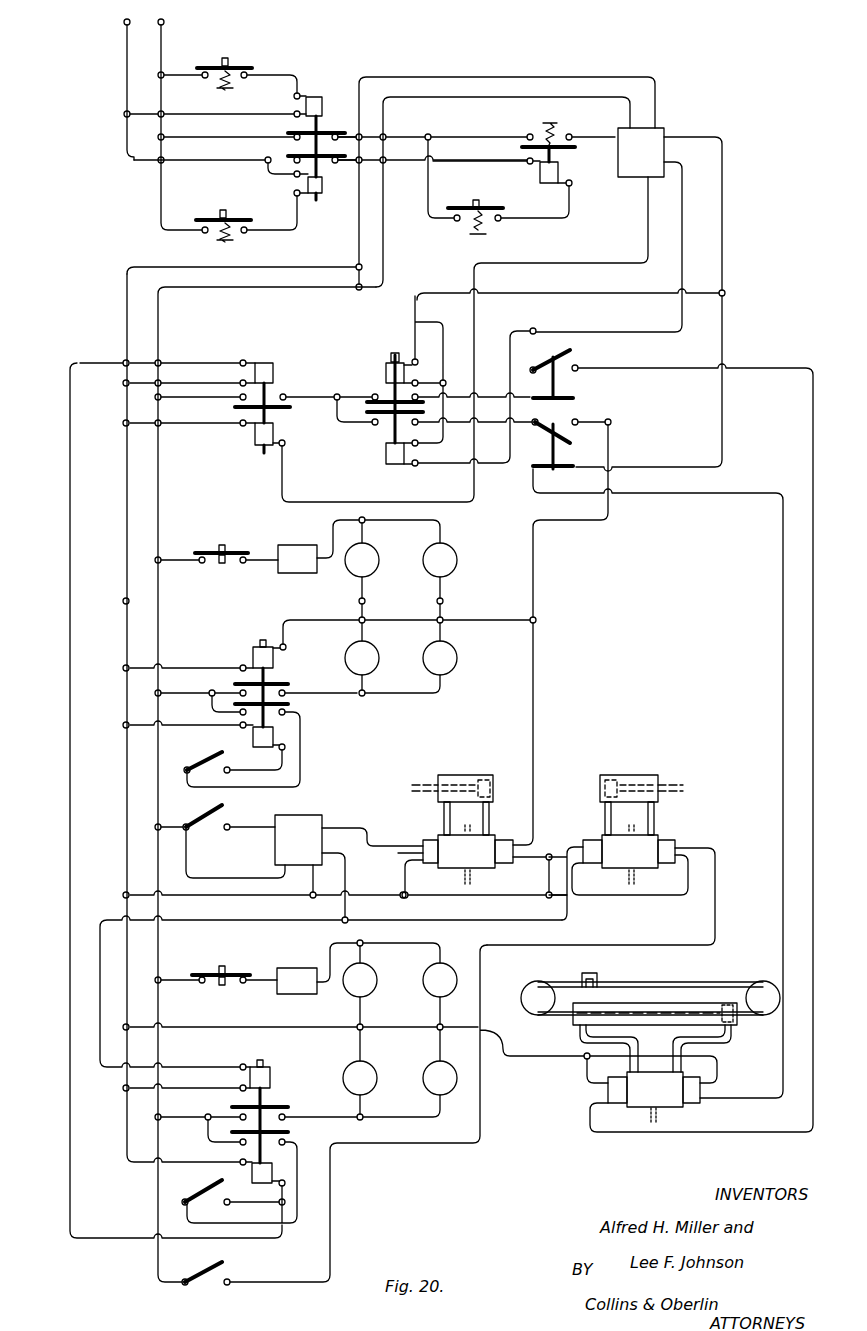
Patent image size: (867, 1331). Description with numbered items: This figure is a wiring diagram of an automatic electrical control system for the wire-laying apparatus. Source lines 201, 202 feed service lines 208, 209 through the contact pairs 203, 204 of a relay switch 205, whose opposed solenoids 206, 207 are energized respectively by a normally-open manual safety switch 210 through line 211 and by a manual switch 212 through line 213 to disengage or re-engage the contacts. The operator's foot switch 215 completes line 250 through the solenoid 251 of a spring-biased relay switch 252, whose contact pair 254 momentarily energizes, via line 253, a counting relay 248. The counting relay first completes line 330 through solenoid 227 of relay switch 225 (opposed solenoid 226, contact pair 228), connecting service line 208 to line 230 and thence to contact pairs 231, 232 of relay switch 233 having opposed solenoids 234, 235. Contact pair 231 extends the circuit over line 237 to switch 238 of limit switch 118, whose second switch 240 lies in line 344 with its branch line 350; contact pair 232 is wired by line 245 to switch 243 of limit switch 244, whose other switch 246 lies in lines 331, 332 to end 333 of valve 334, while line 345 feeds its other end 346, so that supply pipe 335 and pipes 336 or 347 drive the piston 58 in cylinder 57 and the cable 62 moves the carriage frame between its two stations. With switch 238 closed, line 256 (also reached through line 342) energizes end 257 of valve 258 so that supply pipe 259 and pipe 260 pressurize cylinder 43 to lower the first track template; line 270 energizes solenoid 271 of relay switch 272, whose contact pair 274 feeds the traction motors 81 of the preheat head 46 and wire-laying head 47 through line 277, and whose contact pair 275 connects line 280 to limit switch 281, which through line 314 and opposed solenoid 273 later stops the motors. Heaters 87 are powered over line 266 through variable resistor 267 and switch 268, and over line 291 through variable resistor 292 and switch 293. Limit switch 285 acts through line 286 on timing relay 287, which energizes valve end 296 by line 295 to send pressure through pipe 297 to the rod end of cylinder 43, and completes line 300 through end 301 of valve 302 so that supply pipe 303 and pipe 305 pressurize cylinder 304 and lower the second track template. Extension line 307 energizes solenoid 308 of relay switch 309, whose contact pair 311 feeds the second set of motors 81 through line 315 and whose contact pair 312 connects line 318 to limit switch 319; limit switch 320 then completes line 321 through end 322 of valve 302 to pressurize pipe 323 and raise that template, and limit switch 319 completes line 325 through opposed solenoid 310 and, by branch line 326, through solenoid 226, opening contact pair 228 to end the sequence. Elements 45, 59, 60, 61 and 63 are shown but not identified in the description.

The cylinder 43 is at (457, 775).
The solenoid plunger 45 is at (488, 780).
The preheat head 46 is at (373, 571).
The wire-laying head 47 is at (452, 573).
The cylinder 57 is at (613, 1003).
The piston 58 is at (723, 1003).
The belt upper run 59 is at (557, 981).
The roller 60 is at (530, 993).
The guide 61 is at (590, 973).
The cable 62 is at (651, 983).
The roller 63 is at (762, 980).
The traction motors 81 is at (371, 661).
The heaters 87 is at (371, 554).
The limit switch 118 is at (578, 386).
The source line 201 is at (163, 42).
The source line 202 is at (125, 53).
The pair of contacts 203 is at (289, 135).
The pair of contacts 204 is at (282, 156).
The relay switch 205 is at (318, 93).
The solenoid 206 is at (320, 183).
The solenoid 207 is at (306, 103).
The service line 208 is at (268, 289).
The service line 209 is at (147, 258).
The manual control switch 210 is at (221, 207).
The line 211 is at (277, 220).
The manual control switch 212 is at (226, 62).
The line 213 is at (252, 75).
The foot switch 215 is at (476, 200).
The relay switch 225 is at (236, 354).
The solenoid 226 is at (265, 367).
The solenoid 227 is at (255, 438).
The contact pair 228 is at (238, 403).
The line 230 is at (307, 399).
The contact pair 231 is at (380, 396).
The contact pair 232 is at (374, 424).
The relay switch 233 is at (382, 377).
The solenoid 234 is at (386, 456).
The solenoid 235 is at (395, 354).
The line 237 is at (484, 394).
The switch 238 is at (559, 398).
The switch 240 is at (573, 349).
The switch 243 is at (522, 426).
The limit switch 244 is at (538, 451).
The line 245 is at (517, 426).
The switch 246 is at (555, 480).
The counting relay 248 is at (641, 152).
The line 250 is at (532, 220).
The solenoid 251 is at (484, 179).
The spring-biased relay switch 252 is at (572, 159).
The line 253 is at (581, 135).
The contact pair 254 is at (528, 135).
The line 256 is at (612, 413).
The end of valve 257 is at (504, 860).
The valve 258 is at (468, 855).
The supply pipe 259 is at (426, 879).
The pipe 260 is at (490, 808).
The line 266 is at (334, 532).
The variable resistor 267 is at (295, 574).
The on-off manual switch 268 is at (220, 545).
The line 270 is at (292, 622).
The solenoid 271 is at (260, 640).
The relay switch 272 is at (238, 664).
The opposed solenoid 273 is at (252, 737).
The contact pair 274 is at (290, 685).
The contact pair 275 is at (292, 707).
The line 277 is at (375, 698).
The line 280 is at (303, 758).
The limit switch 281 is at (200, 758).
The limit switch 285 is at (200, 818).
The line 286 is at (250, 818).
The timing relay 287 is at (298, 853).
The line 291 is at (328, 962).
The variable resistor 292 is at (293, 995).
The on-off manual switch 293 is at (228, 953).
The line 295 is at (345, 827).
The end of valve 296 is at (390, 854).
The pipe 297 is at (443, 815).
The line 300 is at (348, 879).
The end of valve 301 is at (592, 842).
The valve 302 is at (638, 855).
The supply pipe 303 is at (636, 883).
The cylinder 304 is at (632, 778).
The pipe 305 is at (604, 811).
The extension line 307 is at (220, 921).
The solenoid 308 is at (271, 1073).
The relay switch 309 is at (282, 1064).
The opposed solenoid 310 is at (254, 1177).
The contact pair 311 is at (290, 1106).
The contact pair 312 is at (291, 1133).
The line 314 is at (253, 761).
The line 315 is at (376, 1119).
The line 318 is at (286, 1226).
The limit switch 319 is at (191, 1196).
The limit switch 320 is at (199, 1274).
The line 321 is at (717, 886).
The end of valve 322 is at (668, 851).
The pipe 323 is at (656, 821).
The line 325 is at (233, 1204).
The branch line 326 is at (182, 353).
The line 330 is at (647, 233).
The line 331 is at (724, 197).
The line 332 is at (698, 496).
The end of valve 333 is at (703, 1090).
The valve 334 is at (633, 1080).
The supply pipe 335 is at (659, 1120).
The pipe 336 is at (731, 1033).
The line 342 is at (588, 428).
The line 344 is at (695, 165).
The line 345 is at (753, 367).
The end of valve 346 is at (616, 1101).
The pipe 347 is at (579, 1032).
The branch line 350 is at (430, 465).